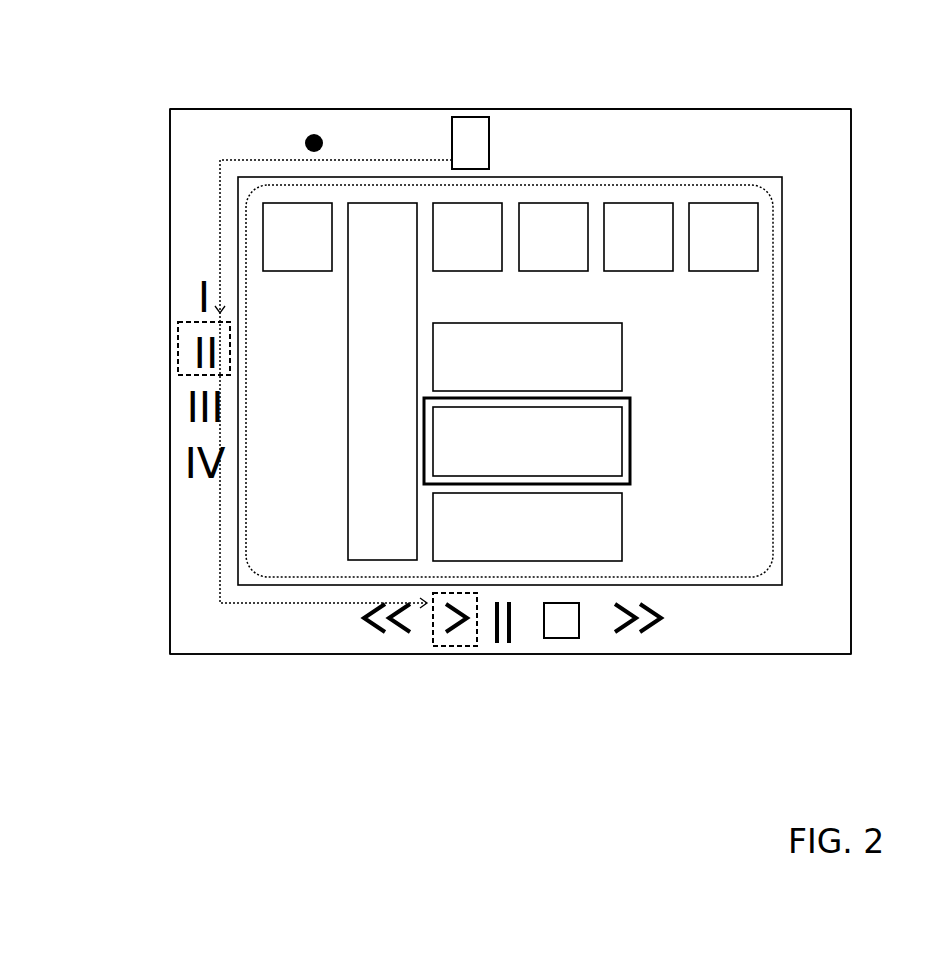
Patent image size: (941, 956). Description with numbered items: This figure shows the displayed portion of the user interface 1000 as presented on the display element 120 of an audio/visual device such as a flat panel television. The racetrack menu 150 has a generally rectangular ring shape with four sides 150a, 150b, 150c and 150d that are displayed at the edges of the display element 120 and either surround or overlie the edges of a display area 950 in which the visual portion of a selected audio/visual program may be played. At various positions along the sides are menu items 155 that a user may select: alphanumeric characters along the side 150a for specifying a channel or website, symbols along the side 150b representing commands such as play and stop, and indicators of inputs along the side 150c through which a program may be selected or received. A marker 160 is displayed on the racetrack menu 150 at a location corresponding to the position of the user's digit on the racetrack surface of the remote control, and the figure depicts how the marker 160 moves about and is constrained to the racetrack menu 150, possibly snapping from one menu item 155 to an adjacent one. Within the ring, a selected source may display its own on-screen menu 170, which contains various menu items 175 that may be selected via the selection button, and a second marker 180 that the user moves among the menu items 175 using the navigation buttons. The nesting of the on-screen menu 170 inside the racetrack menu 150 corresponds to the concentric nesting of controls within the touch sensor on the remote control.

The user interface 1000 is at (298, 829).
The display element 120 is at (278, 109).
The racetrack menu 150 is at (252, 142).
The side of racetrack menu 150a is at (740, 142).
The side of racetrack menu 150b is at (323, 620).
The side of racetrack menu 150c is at (200, 535).
The side of racetrack menu 150d is at (818, 515).
The menu items 155 is at (476, 118).
The marker 160 is at (470, 117).
The on-screen menu 170 is at (771, 575).
The menu items 175 is at (510, 382).
The marker 180 is at (630, 484).
The display area 950 is at (775, 186).